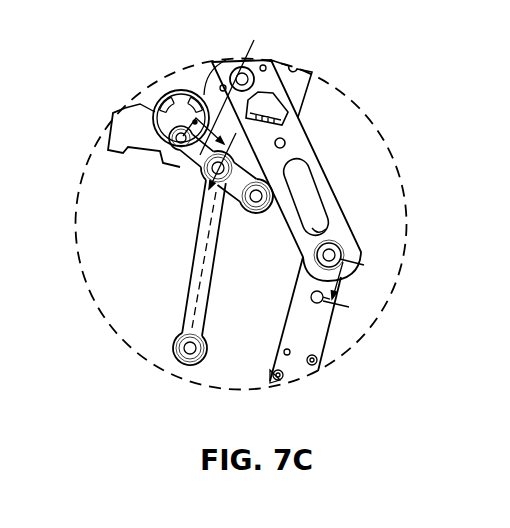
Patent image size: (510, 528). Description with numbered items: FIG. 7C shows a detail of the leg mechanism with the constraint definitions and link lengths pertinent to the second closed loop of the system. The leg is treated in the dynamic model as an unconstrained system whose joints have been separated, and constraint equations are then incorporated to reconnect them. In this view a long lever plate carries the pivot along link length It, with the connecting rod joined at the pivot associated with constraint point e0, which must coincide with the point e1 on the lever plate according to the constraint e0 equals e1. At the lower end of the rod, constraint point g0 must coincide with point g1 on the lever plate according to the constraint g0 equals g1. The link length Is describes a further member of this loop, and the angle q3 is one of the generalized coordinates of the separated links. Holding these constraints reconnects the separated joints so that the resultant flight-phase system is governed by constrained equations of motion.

The shin link length Is is at (232, 83).
The constraint point e1 is at (286, 142).
The generalized coordinate q3 is at (172, 126).
The constraint point e0 is at (256, 205).
The thigh link length It is at (340, 278).
The constraint point g1 is at (313, 330).
The constraint point g0 is at (190, 352).